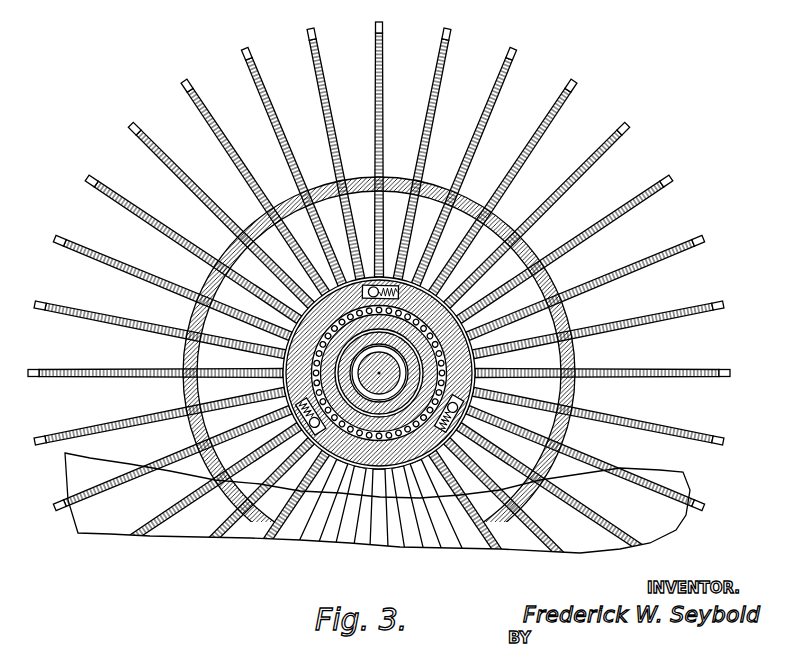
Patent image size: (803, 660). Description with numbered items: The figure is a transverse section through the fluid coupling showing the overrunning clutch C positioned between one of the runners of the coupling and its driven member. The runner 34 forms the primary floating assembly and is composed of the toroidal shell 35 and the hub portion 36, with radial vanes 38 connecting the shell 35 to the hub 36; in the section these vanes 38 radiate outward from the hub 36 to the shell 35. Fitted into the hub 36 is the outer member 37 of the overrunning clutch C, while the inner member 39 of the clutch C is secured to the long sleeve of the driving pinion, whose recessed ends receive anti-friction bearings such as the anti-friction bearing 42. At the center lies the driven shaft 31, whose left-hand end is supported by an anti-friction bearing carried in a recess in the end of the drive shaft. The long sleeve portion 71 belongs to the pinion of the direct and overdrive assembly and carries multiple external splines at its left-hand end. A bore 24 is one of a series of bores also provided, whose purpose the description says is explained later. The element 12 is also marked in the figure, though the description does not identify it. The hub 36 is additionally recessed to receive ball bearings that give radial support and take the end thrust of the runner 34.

The wheel 12 is at (399, 138).
The radial vanes 38 is at (223, 136).
The toroidal shell 35 is at (231, 243).
The hub portion 36 is at (282, 361).
The long sleeve portion 71 is at (470, 342).
The outer member 37 is at (462, 358).
The driven shaft 31 is at (318, 352).
The anti-friction bearing 42 is at (455, 382).
The inner member 39 is at (305, 378).
The overrunning clutch C is at (302, 425).
The bore 24 is at (371, 425).
The runner 34 is at (195, 522).